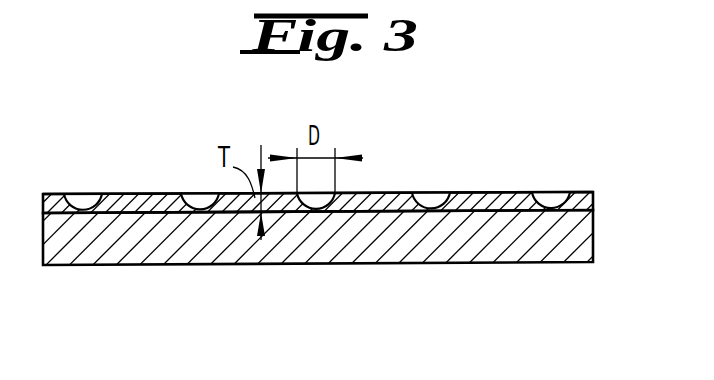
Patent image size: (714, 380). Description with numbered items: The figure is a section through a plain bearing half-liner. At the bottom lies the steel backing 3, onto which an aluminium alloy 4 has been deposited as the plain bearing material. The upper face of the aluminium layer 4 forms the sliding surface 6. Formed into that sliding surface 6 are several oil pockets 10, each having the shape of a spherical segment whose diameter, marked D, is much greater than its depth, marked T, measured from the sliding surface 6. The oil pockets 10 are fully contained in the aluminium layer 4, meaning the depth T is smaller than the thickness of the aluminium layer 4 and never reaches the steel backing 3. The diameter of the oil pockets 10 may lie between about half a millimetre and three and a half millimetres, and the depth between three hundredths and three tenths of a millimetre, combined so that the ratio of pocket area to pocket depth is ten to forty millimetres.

The steel backing 3 is at (337, 243).
The aluminium alloy layer 4 is at (150, 202).
The sliding surface 6 is at (500, 192).
The oil pockets 10 is at (83, 198).